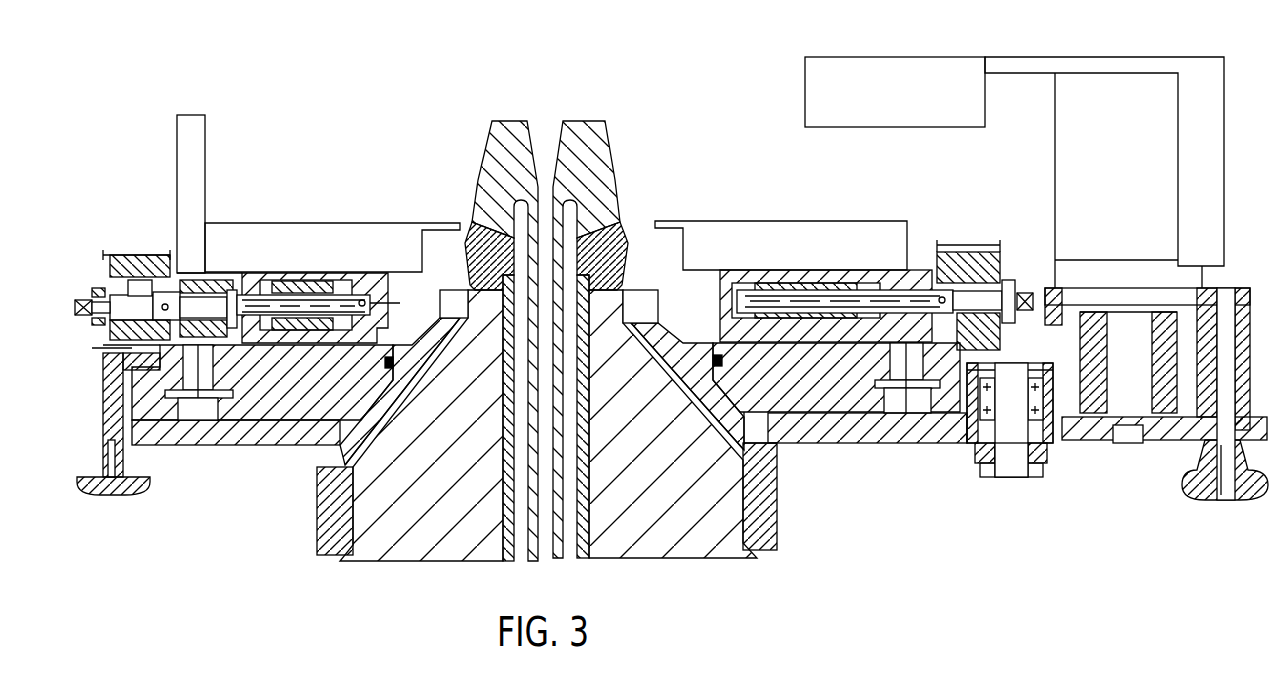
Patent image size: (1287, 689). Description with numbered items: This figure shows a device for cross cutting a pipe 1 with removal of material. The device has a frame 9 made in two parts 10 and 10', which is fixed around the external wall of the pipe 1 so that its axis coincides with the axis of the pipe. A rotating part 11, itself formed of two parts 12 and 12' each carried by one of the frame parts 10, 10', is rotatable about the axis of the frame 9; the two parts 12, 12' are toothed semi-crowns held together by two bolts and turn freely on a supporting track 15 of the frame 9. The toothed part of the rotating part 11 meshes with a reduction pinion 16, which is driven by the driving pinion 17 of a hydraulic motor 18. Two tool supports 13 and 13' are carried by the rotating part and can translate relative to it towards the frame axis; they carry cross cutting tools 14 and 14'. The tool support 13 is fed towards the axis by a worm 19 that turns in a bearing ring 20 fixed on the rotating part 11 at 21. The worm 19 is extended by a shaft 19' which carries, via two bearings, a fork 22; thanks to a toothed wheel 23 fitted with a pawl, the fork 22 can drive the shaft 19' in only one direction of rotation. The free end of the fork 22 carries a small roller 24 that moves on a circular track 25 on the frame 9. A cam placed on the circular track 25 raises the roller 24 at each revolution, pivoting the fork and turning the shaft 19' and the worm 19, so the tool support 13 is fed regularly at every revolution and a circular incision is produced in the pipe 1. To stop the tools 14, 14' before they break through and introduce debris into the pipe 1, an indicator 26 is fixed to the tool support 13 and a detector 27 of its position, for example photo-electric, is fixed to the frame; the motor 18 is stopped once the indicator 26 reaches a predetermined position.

The pipe 1 is at (504, 510).
The frame 9 is at (288, 484).
The frame part 10 is at (410, 425).
The frame part 10' is at (683, 424).
The rotating part 11 is at (279, 446).
The rotating part half 12 is at (300, 386).
The rotating part half 12' is at (791, 386).
The tool support 13 is at (282, 289).
The tool support 13' is at (876, 289).
The cross cutting tool 14 is at (332, 232).
The cross cutting tool 14' is at (781, 231).
The supporting track 15 is at (863, 430).
The reduction pinion 16 is at (1055, 410).
The driving pinion 17 is at (1180, 393).
The hydraulic motor 18 is at (1097, 83).
The worm 19 is at (255, 281).
The shaft 19' is at (88, 296).
The bearing ring 20 is at (217, 345).
The fixing point 21 is at (188, 430).
The fork 22 is at (163, 262).
The toothed wheel 23 is at (138, 280).
The small roller 24 is at (975, 243).
The circular track 25 is at (150, 372).
The indicator 26 is at (205, 134).
The detector 27 is at (866, 72).